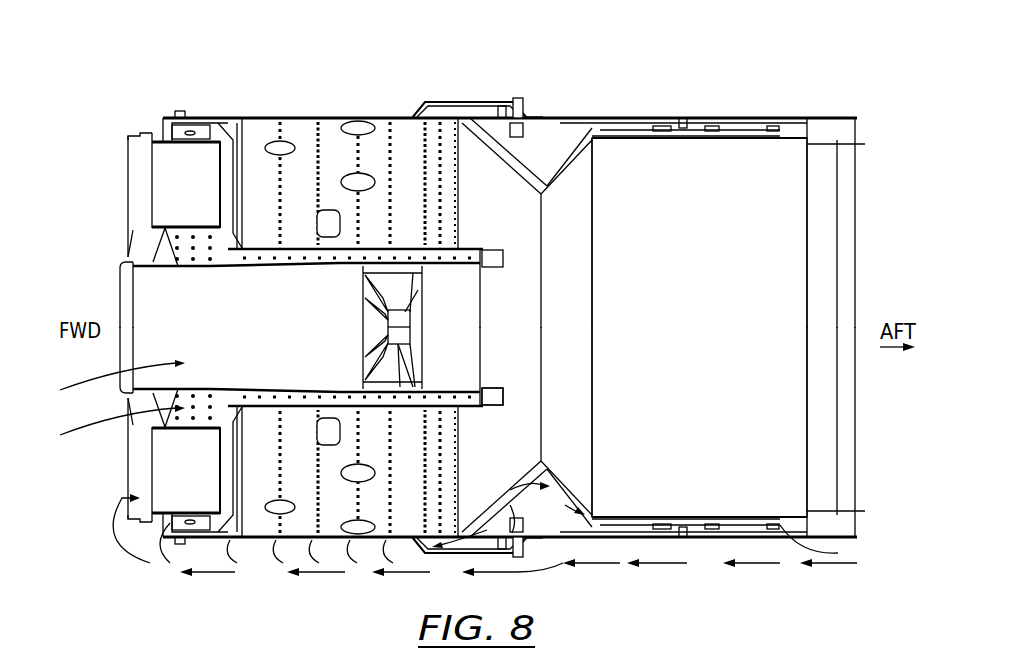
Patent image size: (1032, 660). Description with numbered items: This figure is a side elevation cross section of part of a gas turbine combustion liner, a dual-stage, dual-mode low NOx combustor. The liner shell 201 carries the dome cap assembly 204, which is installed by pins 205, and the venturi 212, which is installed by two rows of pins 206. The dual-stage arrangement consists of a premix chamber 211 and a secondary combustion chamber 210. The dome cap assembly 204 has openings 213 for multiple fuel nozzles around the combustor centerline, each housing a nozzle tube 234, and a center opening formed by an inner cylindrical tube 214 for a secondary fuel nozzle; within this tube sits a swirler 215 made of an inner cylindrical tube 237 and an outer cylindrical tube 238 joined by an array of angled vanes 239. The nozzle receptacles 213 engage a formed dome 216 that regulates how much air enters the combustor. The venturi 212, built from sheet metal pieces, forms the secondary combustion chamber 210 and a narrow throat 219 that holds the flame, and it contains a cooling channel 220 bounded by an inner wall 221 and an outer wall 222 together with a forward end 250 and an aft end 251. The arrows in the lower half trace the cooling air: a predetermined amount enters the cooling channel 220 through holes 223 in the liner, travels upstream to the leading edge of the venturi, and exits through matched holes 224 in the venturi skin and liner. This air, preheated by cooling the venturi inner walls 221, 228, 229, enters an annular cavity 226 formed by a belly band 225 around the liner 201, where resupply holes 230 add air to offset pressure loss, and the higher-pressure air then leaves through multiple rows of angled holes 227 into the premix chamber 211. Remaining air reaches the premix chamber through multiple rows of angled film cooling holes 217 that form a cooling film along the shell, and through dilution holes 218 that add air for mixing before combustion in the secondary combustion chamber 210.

The outer liner 201 is at (265, 112).
The dome cap assembly 204 is at (118, 255).
The pins 205 is at (180, 112).
The pins 206 is at (680, 110).
The secondary combustion chamber 210 is at (718, 389).
The premix chamber 211 is at (319, 194).
The venturi 212 is at (596, 303).
The openings for fuel nozzles 213 is at (167, 192).
The center opening 214 is at (192, 330).
The swirler 215 is at (349, 302).
The formed dome 216 is at (204, 116).
The angled film cooling holes 217 is at (287, 118).
The dilution holes 218 is at (358, 118).
The throat 219 is at (588, 353).
The cooling channel 220 is at (755, 133).
The inner wall 221 is at (758, 143).
The outer wall 222 is at (728, 130).
The holes 223 is at (797, 120).
The matched holes 224 is at (503, 117).
The belly band 225 is at (474, 92).
The annular cavity 226 is at (437, 117).
The angled holes 227 is at (432, 116).
The venturi inner wall 228 is at (549, 168).
The venturi inner wall 229 is at (521, 175).
The resupply holes 230 is at (530, 110).
The nozzle tubes 234 is at (503, 400).
The inner cylindrical tube 237 is at (410, 337).
The outer cylindrical tube 238 is at (392, 272).
The angled vanes 239 is at (378, 355).
The forward end 250 is at (463, 128).
The aft end 251 is at (837, 144).